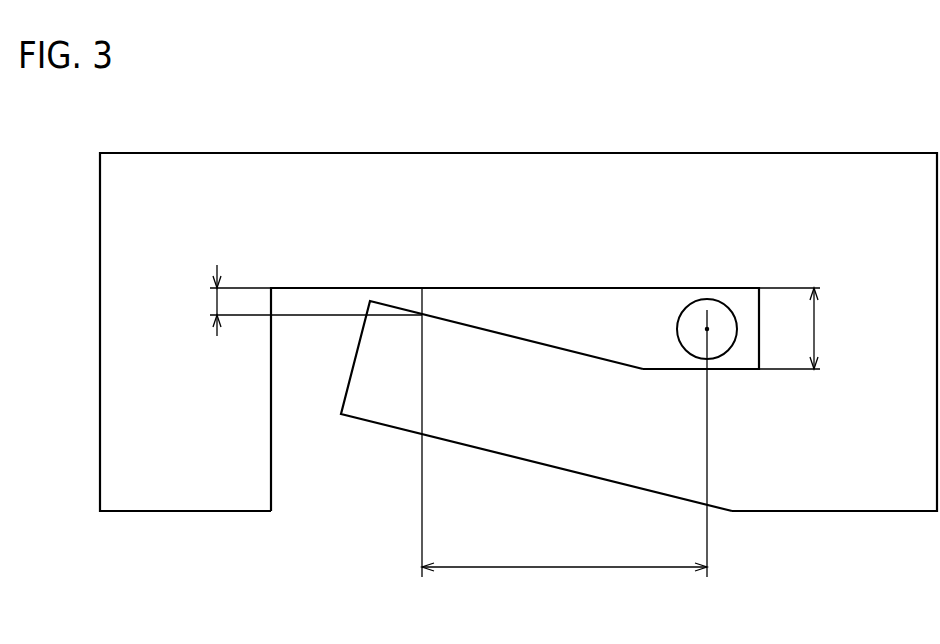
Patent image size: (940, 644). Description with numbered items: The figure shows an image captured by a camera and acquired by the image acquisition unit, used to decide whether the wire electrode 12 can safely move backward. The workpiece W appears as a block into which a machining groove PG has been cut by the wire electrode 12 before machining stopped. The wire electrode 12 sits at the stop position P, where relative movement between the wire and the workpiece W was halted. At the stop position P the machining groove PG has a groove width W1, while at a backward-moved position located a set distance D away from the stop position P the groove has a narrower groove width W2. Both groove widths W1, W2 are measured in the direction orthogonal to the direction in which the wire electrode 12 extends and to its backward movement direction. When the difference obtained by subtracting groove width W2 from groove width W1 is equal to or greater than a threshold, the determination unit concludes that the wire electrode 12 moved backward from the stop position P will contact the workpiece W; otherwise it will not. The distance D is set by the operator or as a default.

The wire electrode 12 is at (718, 310).
The workpiece W is at (803, 172).
The stop position P is at (707, 329).
The machining groove PG is at (608, 330).
The groove width W1 is at (800, 328).
The groove width W2 is at (303, 300).
The distance D is at (564, 432).